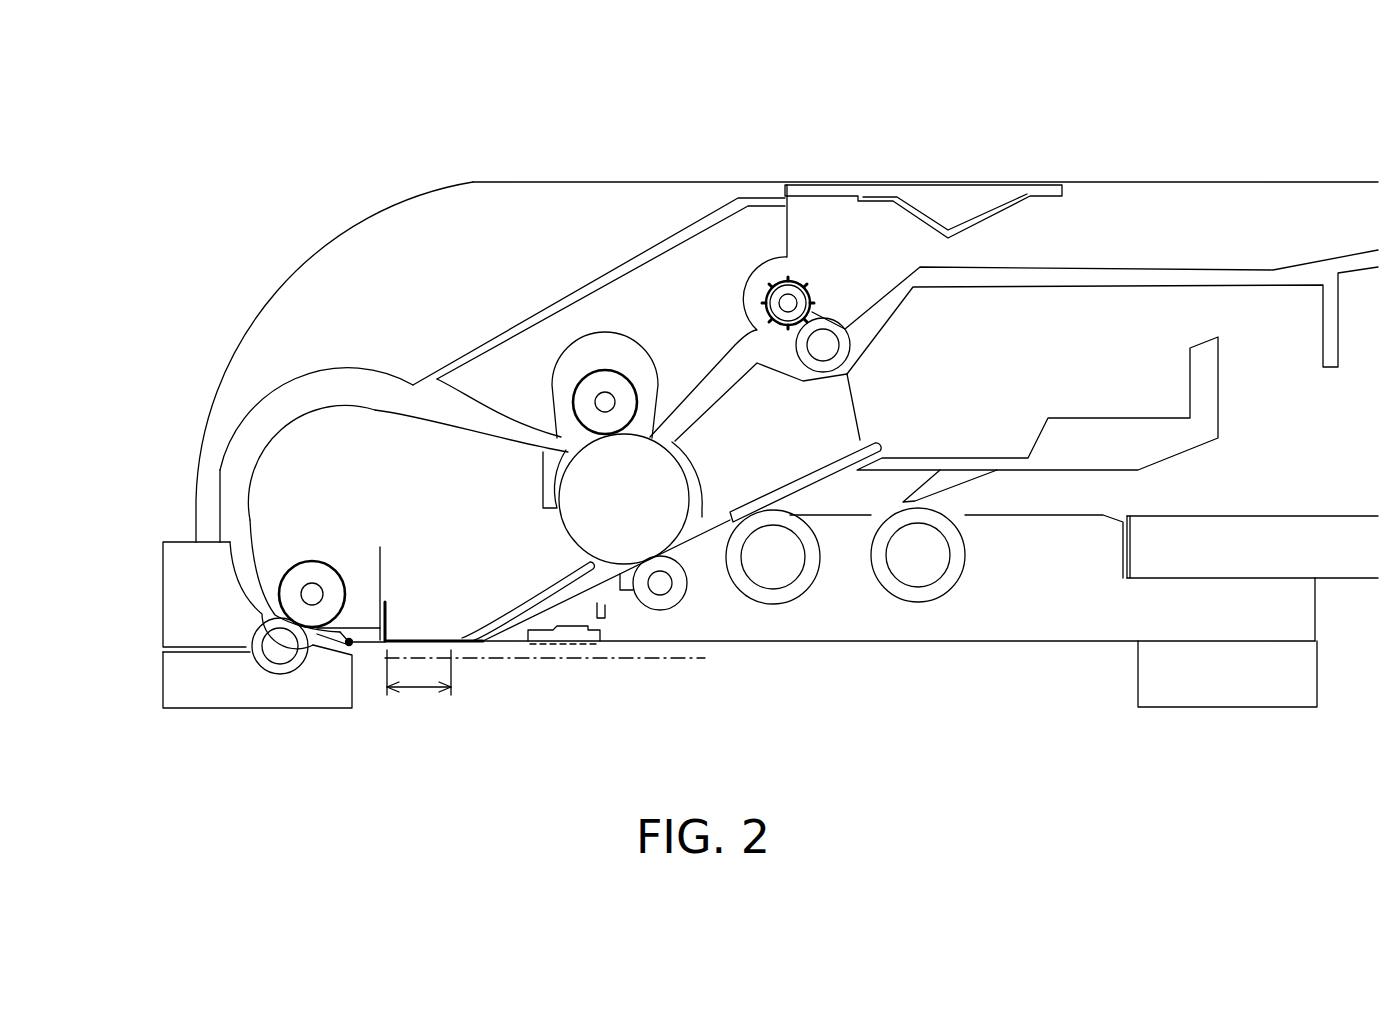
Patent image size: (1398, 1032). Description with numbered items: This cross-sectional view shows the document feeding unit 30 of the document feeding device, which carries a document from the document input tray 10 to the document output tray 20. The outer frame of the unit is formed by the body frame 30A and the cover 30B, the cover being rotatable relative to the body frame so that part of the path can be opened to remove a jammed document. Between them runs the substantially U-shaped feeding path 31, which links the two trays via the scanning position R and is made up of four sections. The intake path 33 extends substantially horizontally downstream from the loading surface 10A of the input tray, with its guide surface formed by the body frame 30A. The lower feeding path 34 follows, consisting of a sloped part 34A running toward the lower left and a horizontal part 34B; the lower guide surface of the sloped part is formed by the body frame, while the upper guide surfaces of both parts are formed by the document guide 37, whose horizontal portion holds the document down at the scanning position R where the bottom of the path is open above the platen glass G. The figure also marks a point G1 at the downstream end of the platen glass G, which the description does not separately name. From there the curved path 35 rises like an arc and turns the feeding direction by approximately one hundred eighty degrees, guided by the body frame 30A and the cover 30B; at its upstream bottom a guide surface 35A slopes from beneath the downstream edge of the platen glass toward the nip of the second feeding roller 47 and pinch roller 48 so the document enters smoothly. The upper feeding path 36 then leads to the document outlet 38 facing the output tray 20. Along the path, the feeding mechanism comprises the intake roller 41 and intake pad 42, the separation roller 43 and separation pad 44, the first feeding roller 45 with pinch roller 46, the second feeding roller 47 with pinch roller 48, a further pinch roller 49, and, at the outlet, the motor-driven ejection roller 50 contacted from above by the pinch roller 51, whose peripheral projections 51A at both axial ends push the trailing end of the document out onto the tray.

The document input tray 10 is at (1315, 500).
The loading surface 10A is at (1260, 514).
The document output tray 20 is at (1228, 268).
The document feeding unit 30 is at (208, 228).
The body frame 30A is at (163, 563).
The cover 30B is at (220, 407).
The feeding path 31 is at (290, 387).
The intake path 33 is at (1130, 492).
The lower feeding path 34 is at (587, 757).
The sloped part 34A is at (550, 605).
The horizontal part 34B is at (470, 645).
The curved path 35 is at (232, 478).
The guide surface 35A is at (343, 622).
The upper feeding path 36 is at (480, 410).
The document guide 37 is at (540, 597).
The document outlet 38 is at (830, 307).
The intake roller 41 is at (933, 590).
The intake pad 42 is at (955, 482).
The separation roller 43 is at (785, 595).
The separation pad 44 is at (830, 473).
The first feeding roller 45 is at (617, 537).
The pinch roller 46 is at (670, 598).
The second feeding roller 47 is at (303, 572).
The pinch roller 48 is at (276, 662).
The pinch roller 49 is at (605, 388).
The ejection roller 50 is at (845, 353).
The pinch roller 51 is at (768, 288).
The projections 51A is at (792, 279).
The platen glass G is at (594, 680).
The reference point G1 is at (350, 640).
The scanning position R is at (419, 684).